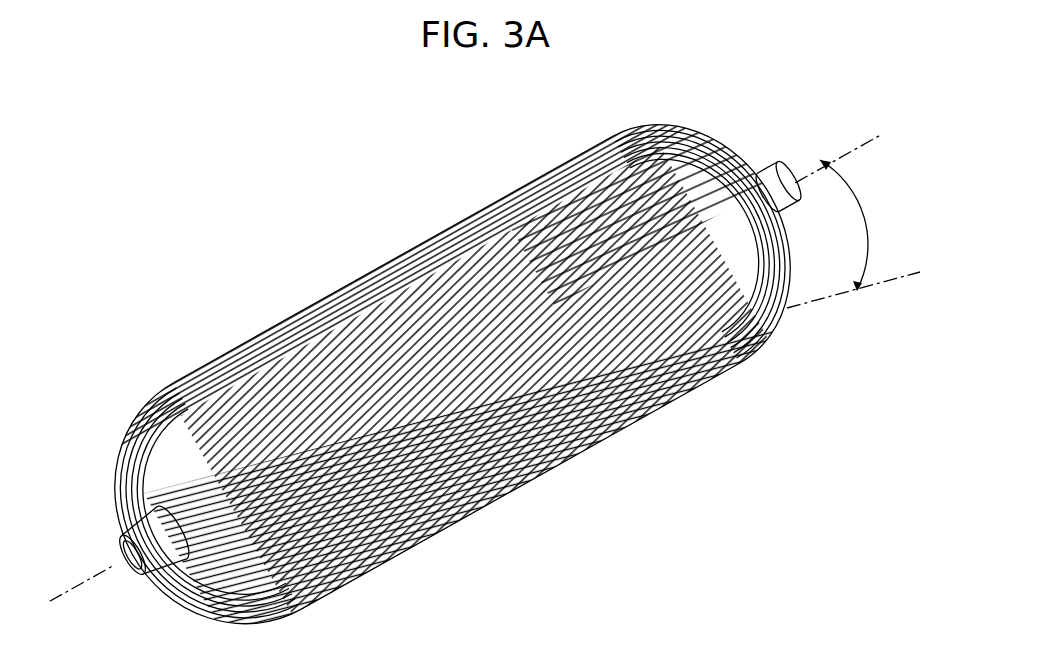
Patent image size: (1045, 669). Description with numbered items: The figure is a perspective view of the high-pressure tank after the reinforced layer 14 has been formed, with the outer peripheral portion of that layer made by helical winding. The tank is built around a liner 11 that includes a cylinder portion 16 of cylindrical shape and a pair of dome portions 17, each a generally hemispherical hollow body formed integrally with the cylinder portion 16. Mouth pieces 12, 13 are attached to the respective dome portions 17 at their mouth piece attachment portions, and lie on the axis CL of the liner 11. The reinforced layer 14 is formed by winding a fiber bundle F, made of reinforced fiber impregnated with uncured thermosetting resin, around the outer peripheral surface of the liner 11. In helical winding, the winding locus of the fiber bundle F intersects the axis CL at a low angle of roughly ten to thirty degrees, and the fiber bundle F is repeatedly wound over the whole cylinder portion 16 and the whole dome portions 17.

The liner 11 is at (598, 100).
The mouth piece 12 is at (113, 540).
The mouth piece 13 is at (758, 167).
The reinforced layer 14 is at (363, 274).
The cylinder portion 16 is at (283, 327).
The dome portion 17 is at (688, 122).
The fiber bundle F is at (687, 307).
The axis CL is at (842, 142).